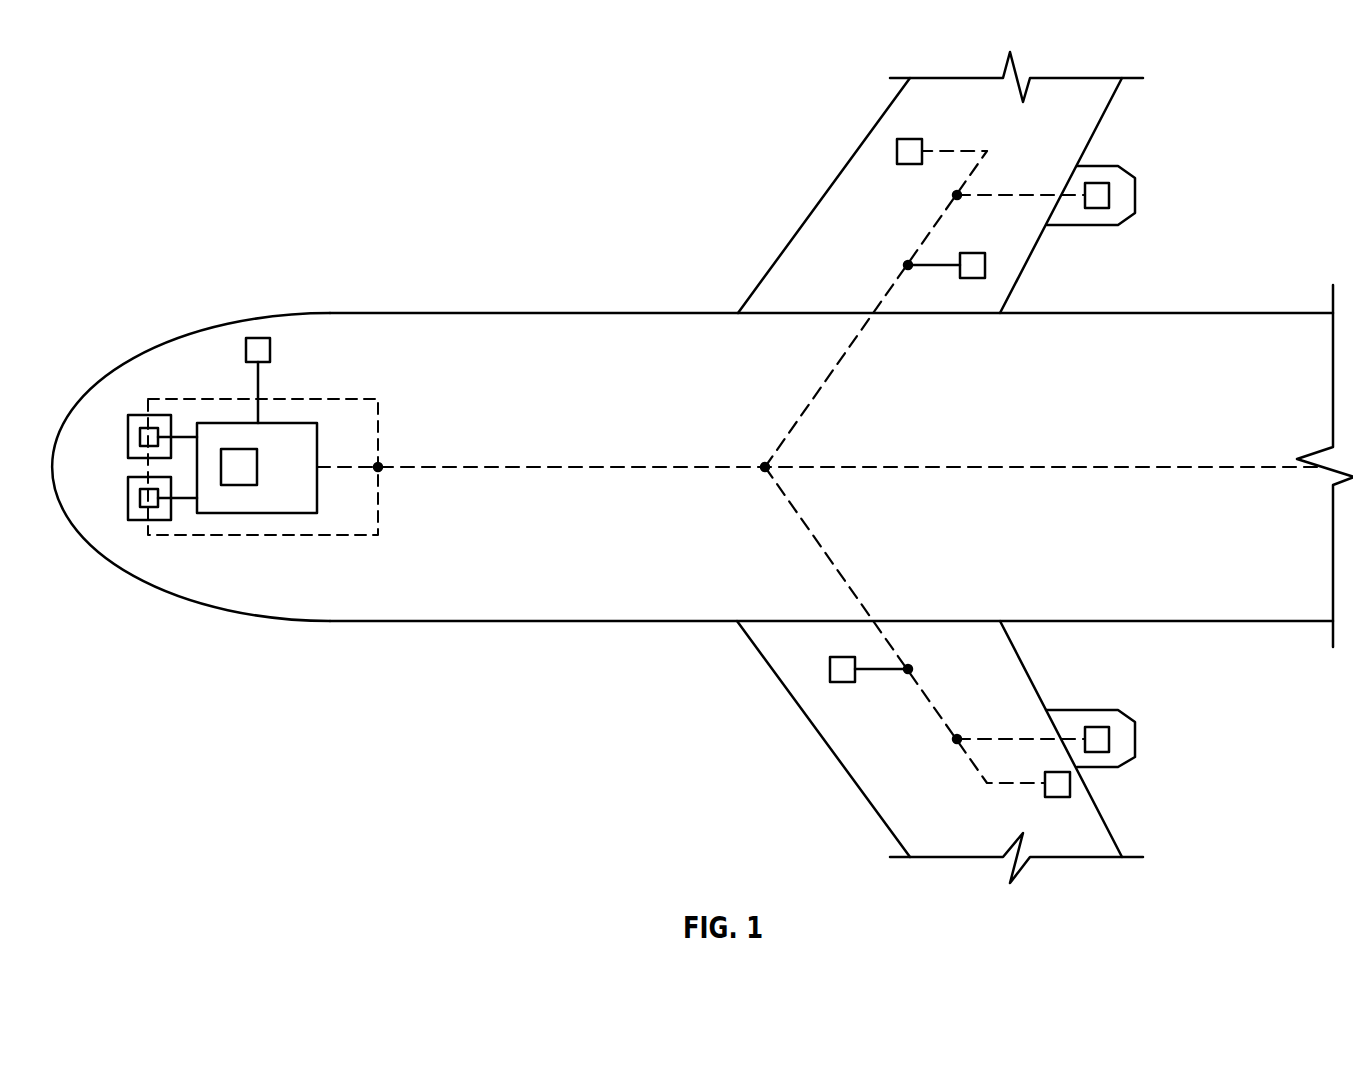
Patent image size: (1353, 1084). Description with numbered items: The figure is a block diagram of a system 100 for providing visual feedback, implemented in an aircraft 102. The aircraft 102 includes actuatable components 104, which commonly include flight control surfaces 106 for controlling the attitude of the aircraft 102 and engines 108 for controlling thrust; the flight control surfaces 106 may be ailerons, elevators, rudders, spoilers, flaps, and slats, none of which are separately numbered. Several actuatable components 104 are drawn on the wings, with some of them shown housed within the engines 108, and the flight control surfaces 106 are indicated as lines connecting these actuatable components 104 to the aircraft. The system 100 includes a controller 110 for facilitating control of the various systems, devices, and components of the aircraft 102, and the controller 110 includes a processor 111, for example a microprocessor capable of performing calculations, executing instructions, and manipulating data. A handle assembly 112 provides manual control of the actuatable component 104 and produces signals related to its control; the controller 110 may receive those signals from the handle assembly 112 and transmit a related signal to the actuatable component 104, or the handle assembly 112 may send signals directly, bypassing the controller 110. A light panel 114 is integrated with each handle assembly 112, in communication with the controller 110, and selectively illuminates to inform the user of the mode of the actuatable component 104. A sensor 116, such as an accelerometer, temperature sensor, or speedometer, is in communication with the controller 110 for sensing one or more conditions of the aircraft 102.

The system 100 is at (505, 360).
The aircraft 102 is at (622, 313).
The actuatable component 104 is at (908, 139).
The flight control surface 106 is at (907, 164).
The engine 108 is at (1097, 183).
The controller 110 is at (288, 513).
The processor 111 is at (257, 467).
The handle assembly 112 is at (137, 415).
The light panel 114 is at (140, 437).
The sensor 116 is at (270, 350).